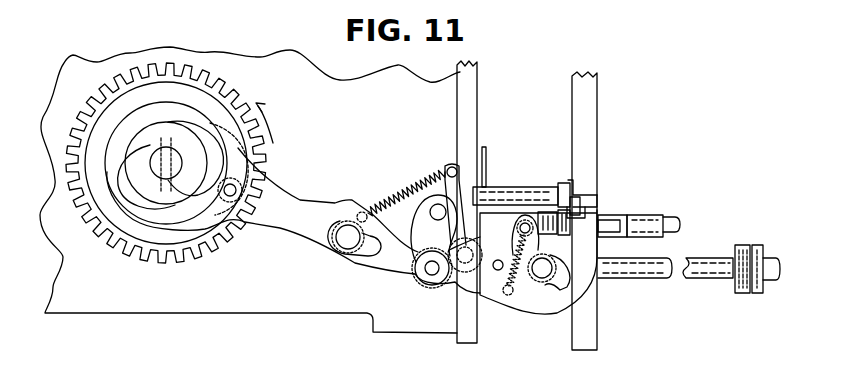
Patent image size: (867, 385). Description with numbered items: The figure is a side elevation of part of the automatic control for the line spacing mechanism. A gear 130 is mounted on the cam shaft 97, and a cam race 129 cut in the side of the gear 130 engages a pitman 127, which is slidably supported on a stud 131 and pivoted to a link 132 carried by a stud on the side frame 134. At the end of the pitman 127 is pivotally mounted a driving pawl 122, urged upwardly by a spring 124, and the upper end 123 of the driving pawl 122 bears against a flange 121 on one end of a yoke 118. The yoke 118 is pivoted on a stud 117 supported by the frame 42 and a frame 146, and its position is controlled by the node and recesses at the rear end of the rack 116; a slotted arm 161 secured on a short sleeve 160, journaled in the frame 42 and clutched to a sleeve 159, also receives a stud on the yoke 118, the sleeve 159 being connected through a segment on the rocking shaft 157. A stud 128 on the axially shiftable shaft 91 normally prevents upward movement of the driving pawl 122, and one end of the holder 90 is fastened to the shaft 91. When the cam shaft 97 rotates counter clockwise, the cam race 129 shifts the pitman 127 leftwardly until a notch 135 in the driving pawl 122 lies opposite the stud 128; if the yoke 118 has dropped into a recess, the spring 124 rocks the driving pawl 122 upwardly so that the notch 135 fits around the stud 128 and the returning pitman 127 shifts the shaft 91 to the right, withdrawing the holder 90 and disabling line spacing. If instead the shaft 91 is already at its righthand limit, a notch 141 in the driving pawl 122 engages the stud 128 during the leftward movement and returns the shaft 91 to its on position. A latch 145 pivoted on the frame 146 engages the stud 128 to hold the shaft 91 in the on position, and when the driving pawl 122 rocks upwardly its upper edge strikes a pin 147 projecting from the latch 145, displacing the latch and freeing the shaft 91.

The side frame 134 is at (412, 72).
The cam race 129 is at (203, 93).
The gear 130 is at (232, 97).
The cam shaft 97 is at (153, 155).
The pitman 127 is at (303, 175).
The stud 131 is at (340, 231).
The link 132 is at (433, 231).
The spring 124 is at (420, 190).
The pin 147 is at (475, 290).
The frame 146 is at (476, 95).
The frame 42 is at (593, 103).
The stud 117 is at (517, 180).
The rack 116 is at (487, 158).
The yoke 118 is at (568, 180).
The slotted arm 161 is at (563, 183).
The flange 121 is at (593, 192).
The upper end of driving pawl 123 is at (598, 207).
The driving pawl 122 is at (528, 305).
The notch 135 is at (553, 282).
The stud 128 is at (552, 258).
The latch 145 is at (513, 257).
The sleeve 159 is at (645, 215).
The short sleeve 160 is at (602, 236).
The rocking shaft 157 is at (675, 217).
The notch 141 is at (590, 291).
The shiftable shaft 91 is at (723, 277).
The holder 90 is at (760, 247).